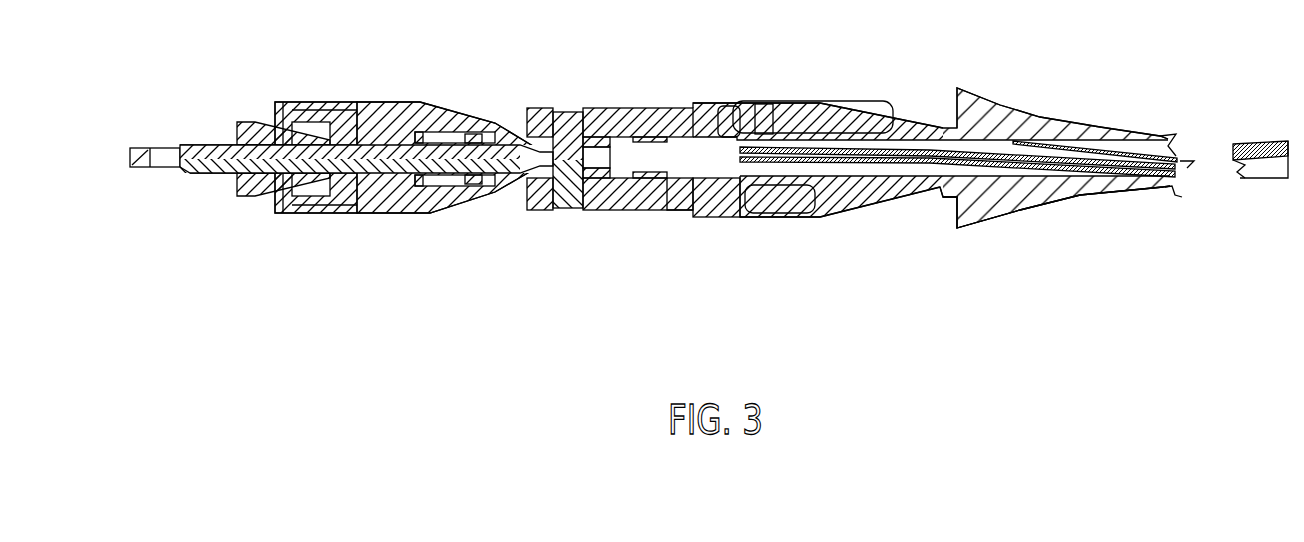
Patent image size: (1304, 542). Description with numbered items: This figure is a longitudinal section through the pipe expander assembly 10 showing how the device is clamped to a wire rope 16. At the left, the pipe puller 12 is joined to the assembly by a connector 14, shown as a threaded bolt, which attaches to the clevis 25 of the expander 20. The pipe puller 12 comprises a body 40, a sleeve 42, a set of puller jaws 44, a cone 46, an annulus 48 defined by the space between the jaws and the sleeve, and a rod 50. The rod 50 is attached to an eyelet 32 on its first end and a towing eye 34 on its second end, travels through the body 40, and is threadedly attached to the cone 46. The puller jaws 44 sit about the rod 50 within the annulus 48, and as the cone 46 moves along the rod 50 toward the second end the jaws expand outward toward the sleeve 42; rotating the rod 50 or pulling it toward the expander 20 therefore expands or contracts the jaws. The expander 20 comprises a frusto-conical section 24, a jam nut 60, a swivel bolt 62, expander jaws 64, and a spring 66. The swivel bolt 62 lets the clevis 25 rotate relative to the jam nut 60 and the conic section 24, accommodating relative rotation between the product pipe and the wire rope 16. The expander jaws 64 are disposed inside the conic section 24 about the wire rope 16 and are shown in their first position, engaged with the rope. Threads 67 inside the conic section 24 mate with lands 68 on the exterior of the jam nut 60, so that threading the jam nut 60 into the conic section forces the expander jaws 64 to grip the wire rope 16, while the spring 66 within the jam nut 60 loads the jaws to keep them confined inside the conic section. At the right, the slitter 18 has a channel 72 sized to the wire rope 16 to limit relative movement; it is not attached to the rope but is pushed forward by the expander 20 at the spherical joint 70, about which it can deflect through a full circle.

The pipe expander assembly 10 is at (818, 110).
The pipe puller 12 is at (356, 106).
The connector 14 is at (587, 194).
The wire rope 16 is at (1014, 113).
The slitter 18 is at (1061, 122).
The expander 20 is at (890, 70).
The frusto-conical section 24 is at (955, 226).
The clevis 25 is at (608, 243).
The eyelet 32 is at (335, 124).
The towing eye 34 is at (508, 139).
The body 40 is at (445, 125).
The sleeve 42 is at (277, 220).
The puller jaws 44 is at (285, 95).
The cone 46 is at (242, 179).
The annulus 48 is at (362, 214).
The rod 50 is at (406, 214).
The jam nut 60 is at (685, 258).
The swivel bolt 62 is at (646, 240).
The expander jaws 64 is at (824, 94).
The spring 66 is at (689, 98).
The threads 67 is at (766, 240).
The lands 68 is at (735, 67).
The spherical joint 70 is at (1025, 224).
The channel 72 is at (1055, 95).